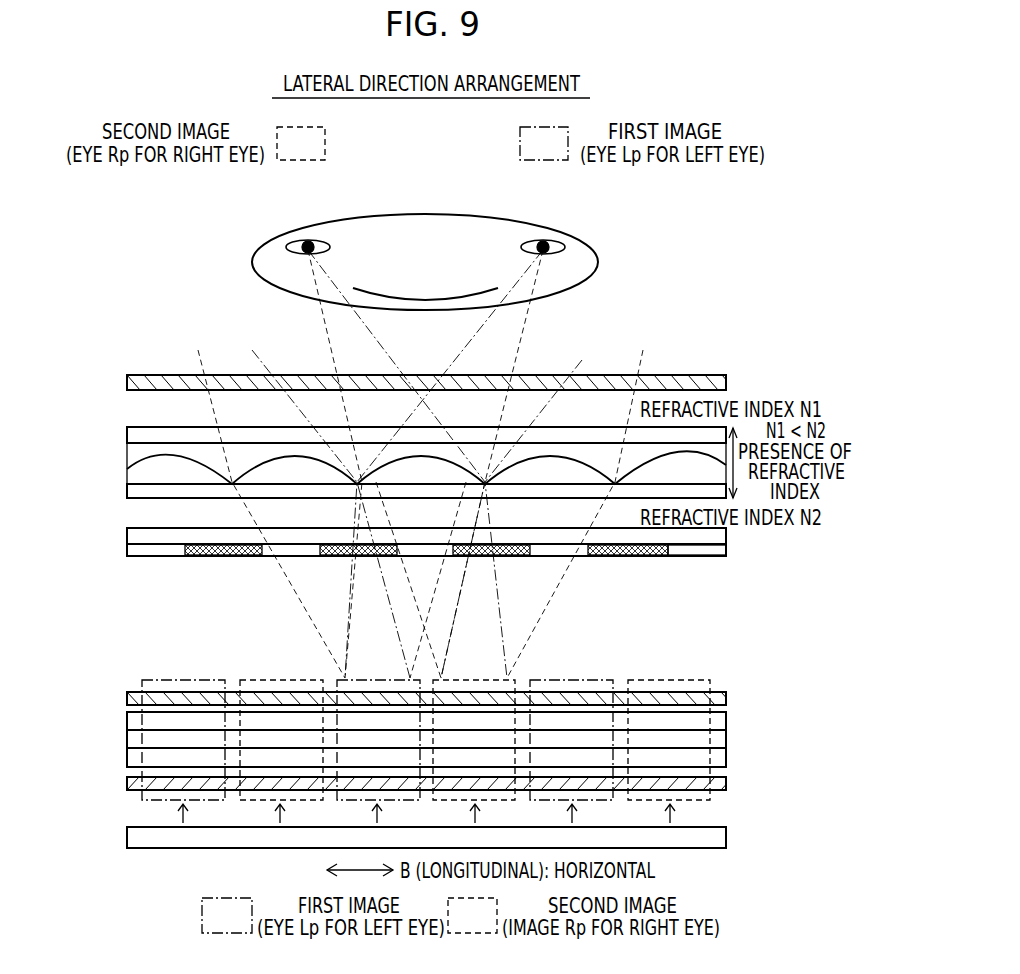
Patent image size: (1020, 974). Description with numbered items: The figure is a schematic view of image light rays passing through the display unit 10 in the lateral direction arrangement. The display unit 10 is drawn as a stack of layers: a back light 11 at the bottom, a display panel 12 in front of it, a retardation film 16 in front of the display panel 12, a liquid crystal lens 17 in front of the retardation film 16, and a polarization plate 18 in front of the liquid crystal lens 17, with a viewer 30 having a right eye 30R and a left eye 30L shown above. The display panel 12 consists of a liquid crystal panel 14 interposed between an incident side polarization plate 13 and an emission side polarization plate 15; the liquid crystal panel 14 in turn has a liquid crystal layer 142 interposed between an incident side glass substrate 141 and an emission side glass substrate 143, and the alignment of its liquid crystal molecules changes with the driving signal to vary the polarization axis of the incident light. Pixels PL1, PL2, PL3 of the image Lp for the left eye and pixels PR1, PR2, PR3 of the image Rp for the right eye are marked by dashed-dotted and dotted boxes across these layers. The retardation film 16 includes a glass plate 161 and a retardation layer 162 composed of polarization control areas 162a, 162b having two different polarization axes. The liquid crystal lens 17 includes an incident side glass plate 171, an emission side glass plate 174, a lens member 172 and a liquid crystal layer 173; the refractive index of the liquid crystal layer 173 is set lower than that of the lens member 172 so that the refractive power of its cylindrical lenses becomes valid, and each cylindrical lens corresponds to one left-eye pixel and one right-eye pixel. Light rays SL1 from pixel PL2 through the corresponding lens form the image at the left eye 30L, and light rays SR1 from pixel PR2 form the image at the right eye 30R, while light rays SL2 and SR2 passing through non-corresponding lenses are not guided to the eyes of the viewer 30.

The display unit 10 is at (116, 296).
The back light 11 is at (127, 838).
The display panel 12 is at (365, 744).
The incident side polarization plate 13 is at (393, 787).
The liquid crystal panel 14 is at (383, 741).
The emission side polarization plate 15 is at (127, 698).
The retardation film 16 is at (381, 588).
The liquid crystal lens 17 is at (377, 463).
The polarization plate 18 is at (127, 381).
The viewer 30 is at (598, 262).
The right eye 30R is at (308, 247).
The left eye 30L is at (543, 247).
The incident side glass substrate 141 is at (402, 760).
The liquid crystal layer 142 is at (127, 739).
The emission side glass substrate 143 is at (127, 720).
The glass plate 161 is at (127, 531).
The retardation layer 162 is at (401, 599).
The polarization control area 162a is at (660, 556).
The second polarization control area 162b is at (709, 556).
The incident side glass plate 171 is at (397, 499).
The lens member 172 is at (397, 489).
The liquid crystal layer 173 is at (127, 453).
The emission side glass plate 174 is at (127, 430).
The pixel PL1 is at (176, 753).
The pixel PL2 is at (371, 753).
The pixel PL3 is at (565, 753).
The pixel PR1 is at (274, 753).
The pixel PR2 is at (466, 753).
The pixel PR3 is at (661, 753).
The light rays SL1 is at (463, 336).
The light rays SL2 is at (262, 356).
The light rays SR1 is at (382, 343).
The light rays SR2 is at (582, 355).